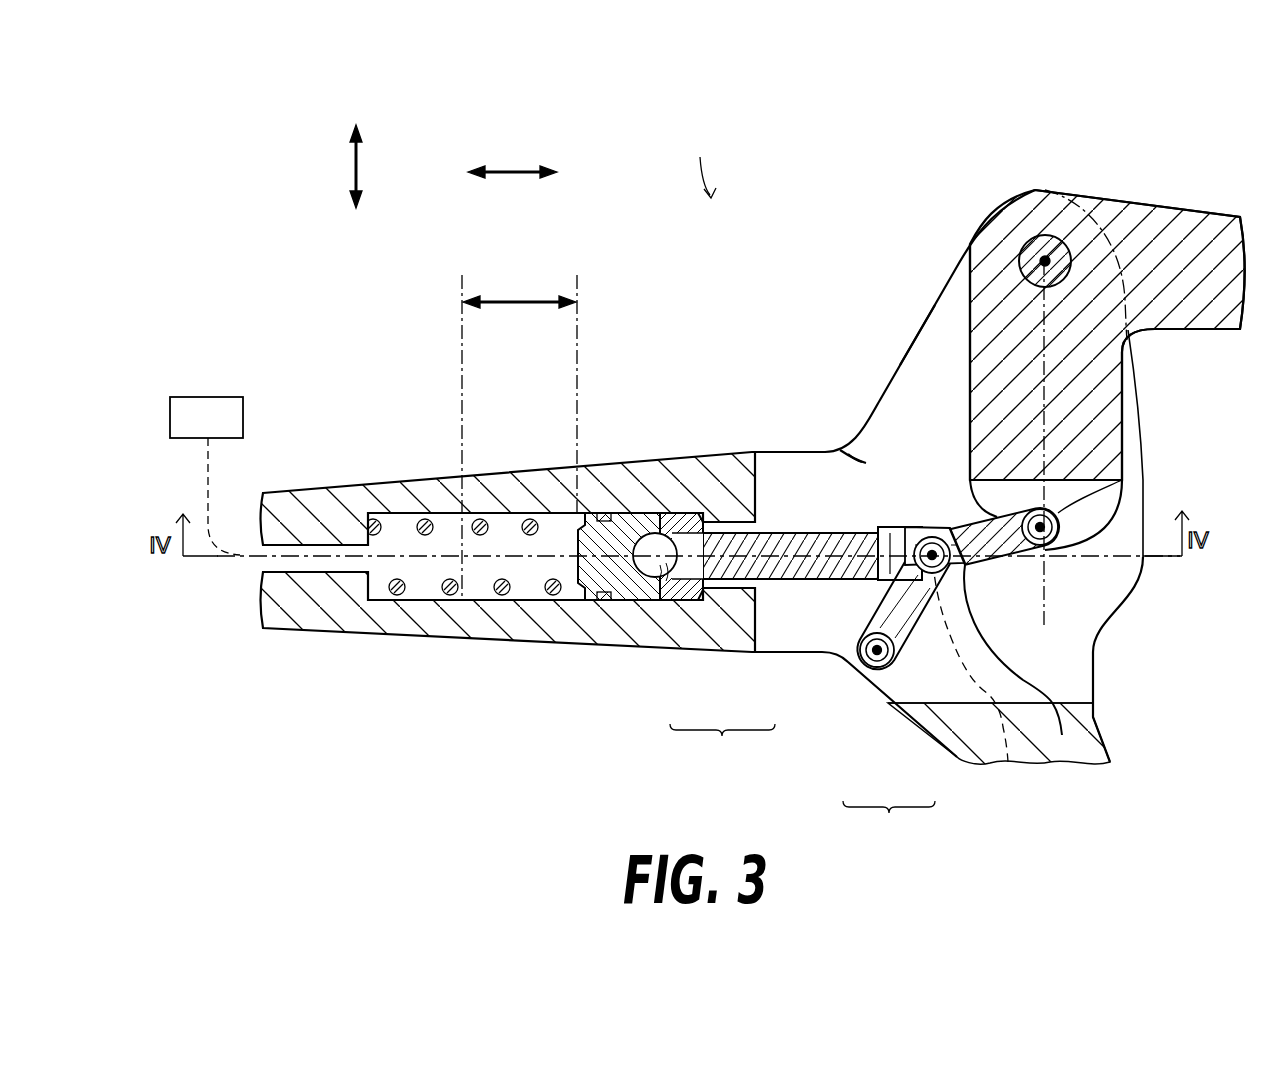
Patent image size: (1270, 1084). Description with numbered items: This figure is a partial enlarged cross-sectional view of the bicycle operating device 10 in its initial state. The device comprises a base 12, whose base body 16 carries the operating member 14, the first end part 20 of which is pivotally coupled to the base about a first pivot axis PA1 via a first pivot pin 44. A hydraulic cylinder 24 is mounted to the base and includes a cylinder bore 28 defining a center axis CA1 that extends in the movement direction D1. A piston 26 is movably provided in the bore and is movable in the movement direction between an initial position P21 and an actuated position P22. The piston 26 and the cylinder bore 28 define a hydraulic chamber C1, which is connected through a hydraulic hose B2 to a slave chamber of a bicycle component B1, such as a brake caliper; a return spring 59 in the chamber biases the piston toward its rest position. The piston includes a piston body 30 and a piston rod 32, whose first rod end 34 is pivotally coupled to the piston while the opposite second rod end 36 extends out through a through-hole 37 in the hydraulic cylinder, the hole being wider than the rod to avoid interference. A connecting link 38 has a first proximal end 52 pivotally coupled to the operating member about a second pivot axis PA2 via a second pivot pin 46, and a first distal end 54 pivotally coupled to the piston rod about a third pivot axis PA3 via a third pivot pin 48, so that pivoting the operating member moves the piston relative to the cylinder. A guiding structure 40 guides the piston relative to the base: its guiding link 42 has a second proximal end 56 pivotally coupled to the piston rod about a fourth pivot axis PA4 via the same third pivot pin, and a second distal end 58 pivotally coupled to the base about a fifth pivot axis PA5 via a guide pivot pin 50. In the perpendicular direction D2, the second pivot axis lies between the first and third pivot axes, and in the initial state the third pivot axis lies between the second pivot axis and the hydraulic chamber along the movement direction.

The bicycle operating device 10 is at (699, 162).
The base 12 is at (1152, 571).
The operating member 14 is at (1170, 200).
The base body 16 is at (1120, 600).
The first end part 20 is at (1007, 222).
The hydraulic cylinder 24 is at (437, 612).
The piston 26 is at (722, 742).
The cylinder bore 28 is at (421, 598).
The piston body 30 is at (632, 600).
The piston rod 32 is at (798, 567).
The first rod end 34 is at (653, 541).
The second rod end 36 is at (822, 460).
The through-hole 37 is at (900, 527).
The connecting link 38 is at (1062, 735).
The guiding structure 40 is at (889, 819).
The guiding link 42 is at (965, 570).
The first pivot pin 44 is at (1030, 248).
The second pivot pin 46 is at (1028, 512).
The third pivot pin 48 is at (925, 525).
The guide pivot pin 50 is at (869, 669).
The first proximal end 52 is at (1122, 480).
The first distal end 54 is at (1008, 762).
The second proximal end 56 is at (935, 532).
The second distal end 58 is at (887, 670).
The return spring 59 is at (512, 600).
The bicycle component B1 is at (195, 431).
The hydraulic hose B2 is at (212, 478).
The hydraulic chamber C1 is at (406, 535).
The center axis CA1 is at (200, 560).
The movement direction D1 is at (517, 171).
The perpendicular direction D2 is at (353, 158).
The initial position P21 is at (577, 281).
The actuated position P22 is at (462, 281).
The first pivot axis PA1 is at (1046, 261).
The second pivot axis PA2 is at (944, 530).
The third pivot axis PA3 is at (870, 470).
The fourth pivot axis PA4 is at (836, 415).
The fifth pivot axis PA5 is at (878, 668).